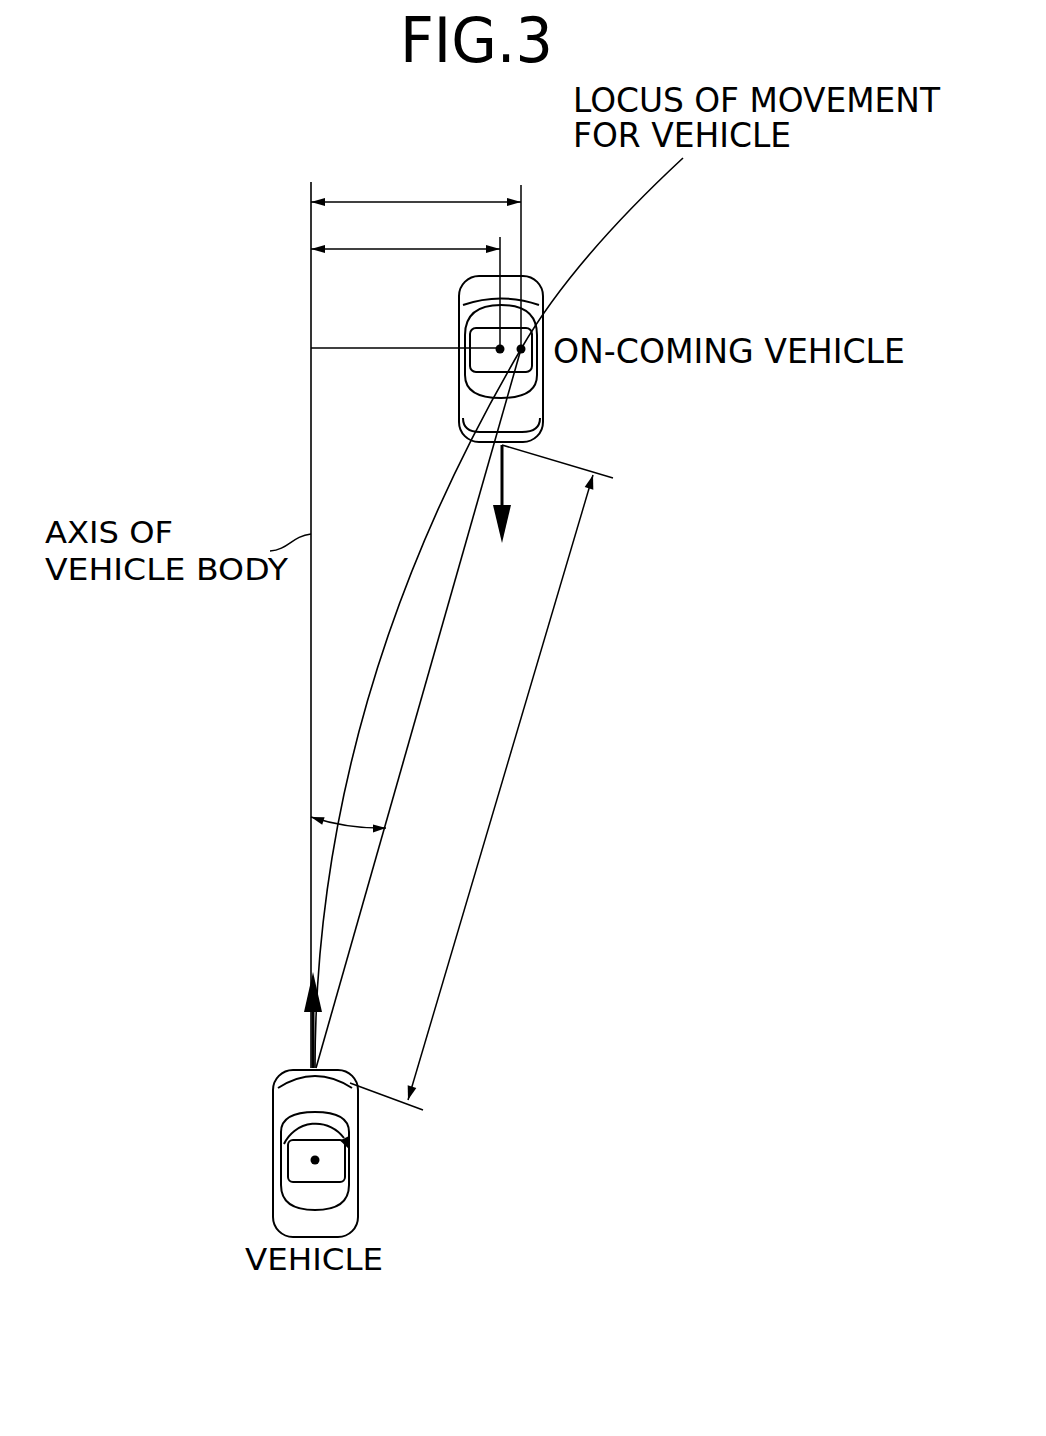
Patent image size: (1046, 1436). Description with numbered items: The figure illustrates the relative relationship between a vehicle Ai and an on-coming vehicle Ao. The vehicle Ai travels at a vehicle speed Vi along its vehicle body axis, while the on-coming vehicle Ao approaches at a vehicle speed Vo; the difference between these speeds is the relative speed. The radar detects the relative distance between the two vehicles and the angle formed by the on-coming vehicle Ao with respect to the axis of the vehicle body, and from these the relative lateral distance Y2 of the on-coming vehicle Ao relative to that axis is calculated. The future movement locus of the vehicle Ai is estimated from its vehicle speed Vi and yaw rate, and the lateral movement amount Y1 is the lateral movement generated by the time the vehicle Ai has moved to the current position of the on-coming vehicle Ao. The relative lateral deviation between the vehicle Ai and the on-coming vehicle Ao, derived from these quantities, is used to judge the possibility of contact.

The lateral movement amount Y1 is at (416, 252).
The relative lateral distance Y2 is at (405, 277).
The on-coming vehicle Ao is at (517, 352).
The vehicle speed of the on-coming vehicle Vo is at (526, 494).
The vehicle speed Vi is at (294, 1020).
The vehicle Ai is at (320, 1163).